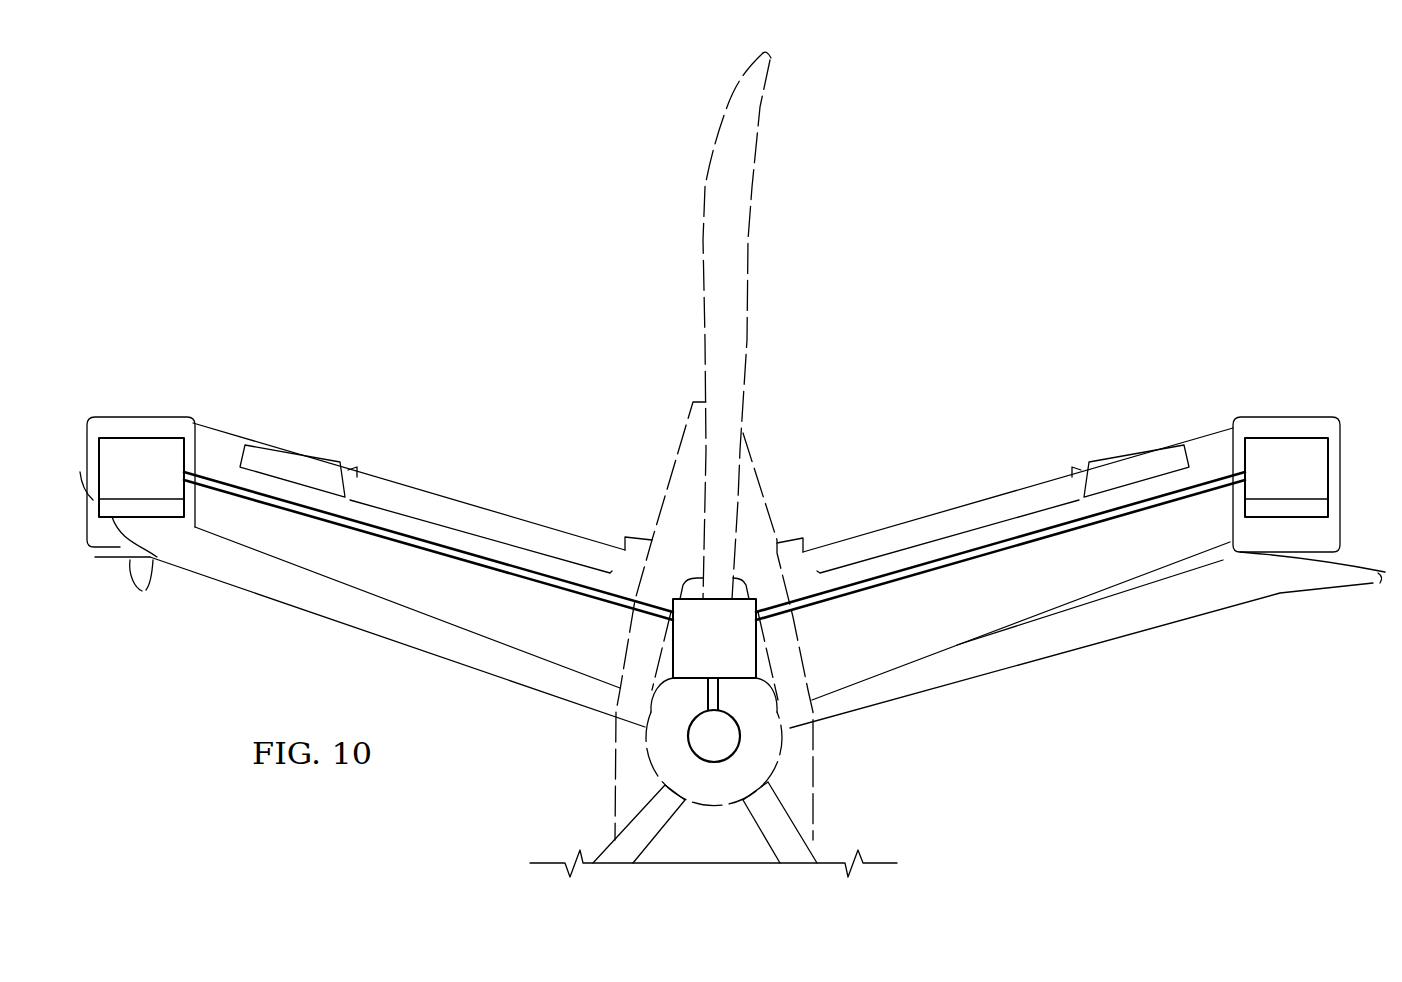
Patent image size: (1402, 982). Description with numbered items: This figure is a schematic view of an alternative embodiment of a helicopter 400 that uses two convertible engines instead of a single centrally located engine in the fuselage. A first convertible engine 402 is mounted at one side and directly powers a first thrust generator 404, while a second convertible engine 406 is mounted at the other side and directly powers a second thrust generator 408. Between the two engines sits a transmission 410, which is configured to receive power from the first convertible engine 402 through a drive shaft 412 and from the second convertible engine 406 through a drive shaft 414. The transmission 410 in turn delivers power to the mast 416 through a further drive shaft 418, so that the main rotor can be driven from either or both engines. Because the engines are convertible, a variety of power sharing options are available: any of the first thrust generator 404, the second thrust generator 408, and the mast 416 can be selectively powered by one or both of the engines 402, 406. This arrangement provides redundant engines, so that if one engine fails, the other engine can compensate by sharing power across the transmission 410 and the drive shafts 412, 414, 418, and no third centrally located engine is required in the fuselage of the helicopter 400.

The helicopter 400 is at (945, 311).
The first convertible engine 402 is at (1267, 484).
The first thrust generator 404 is at (1290, 518).
The second convertible engine 406 is at (122, 484).
The second thrust generator 408 is at (132, 518).
The transmission 410 is at (694, 654).
The drive shaft 412 is at (900, 584).
The drive shaft 414 is at (588, 604).
The mast 416 is at (688, 735).
The drive shaft 418 is at (723, 692).